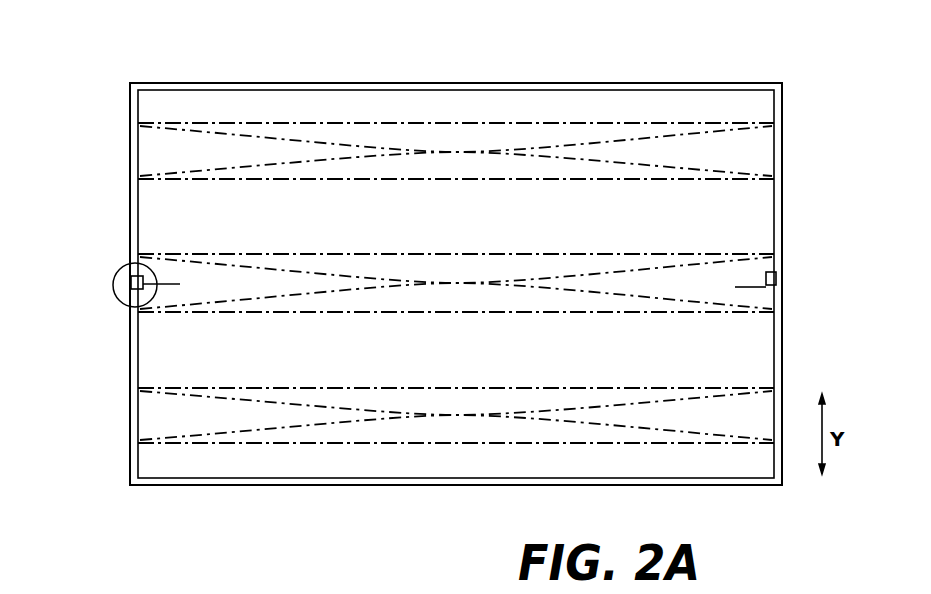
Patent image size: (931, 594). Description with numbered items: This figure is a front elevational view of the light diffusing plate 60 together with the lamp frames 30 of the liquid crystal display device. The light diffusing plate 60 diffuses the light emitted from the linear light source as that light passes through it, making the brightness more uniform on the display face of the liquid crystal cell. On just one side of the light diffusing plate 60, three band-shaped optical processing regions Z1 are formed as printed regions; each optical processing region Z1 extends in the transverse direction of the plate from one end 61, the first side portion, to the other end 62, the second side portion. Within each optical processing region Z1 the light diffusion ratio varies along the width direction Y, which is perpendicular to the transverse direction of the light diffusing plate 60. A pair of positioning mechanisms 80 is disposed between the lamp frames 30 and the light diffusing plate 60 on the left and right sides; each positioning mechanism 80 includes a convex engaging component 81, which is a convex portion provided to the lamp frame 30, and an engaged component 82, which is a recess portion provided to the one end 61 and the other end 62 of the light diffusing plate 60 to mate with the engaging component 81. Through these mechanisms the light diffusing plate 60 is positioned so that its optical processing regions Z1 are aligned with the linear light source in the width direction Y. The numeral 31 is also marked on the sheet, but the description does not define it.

The light diffusing plate 60 is at (235, 100).
The lamp frame 30 is at (131, 143).
The one end (first side portion) 61 is at (131, 210).
The other end (second side portion) 62 is at (781, 217).
The optical processing region Z1 is at (305, 140).
The positioning mechanism 80 is at (108, 268).
The convex engaging component 81 is at (129, 289).
The engaged component 82 is at (454, 290).
The cross-section reference 31 is at (127, 300).